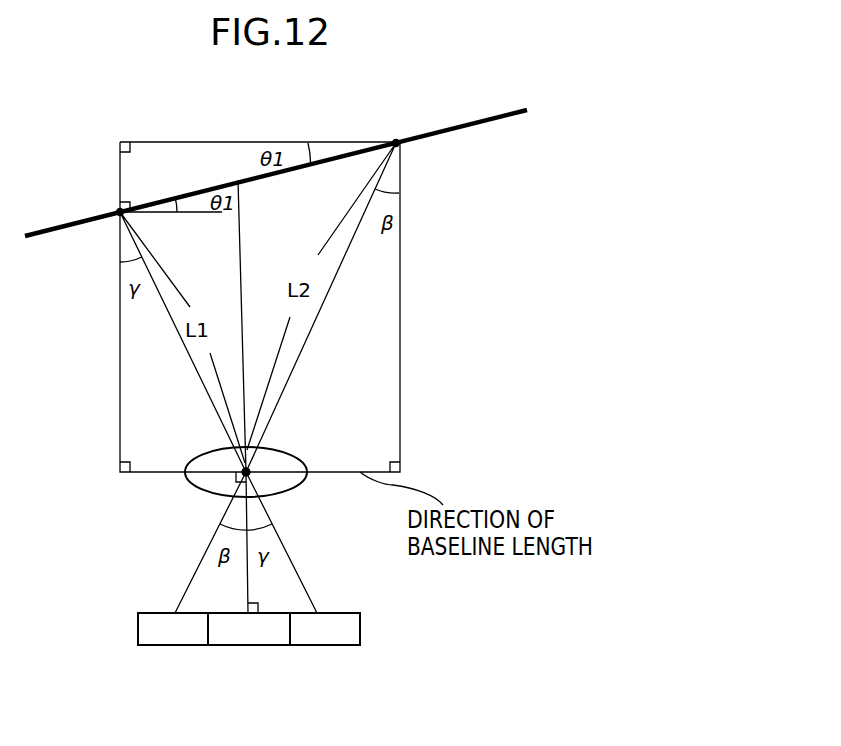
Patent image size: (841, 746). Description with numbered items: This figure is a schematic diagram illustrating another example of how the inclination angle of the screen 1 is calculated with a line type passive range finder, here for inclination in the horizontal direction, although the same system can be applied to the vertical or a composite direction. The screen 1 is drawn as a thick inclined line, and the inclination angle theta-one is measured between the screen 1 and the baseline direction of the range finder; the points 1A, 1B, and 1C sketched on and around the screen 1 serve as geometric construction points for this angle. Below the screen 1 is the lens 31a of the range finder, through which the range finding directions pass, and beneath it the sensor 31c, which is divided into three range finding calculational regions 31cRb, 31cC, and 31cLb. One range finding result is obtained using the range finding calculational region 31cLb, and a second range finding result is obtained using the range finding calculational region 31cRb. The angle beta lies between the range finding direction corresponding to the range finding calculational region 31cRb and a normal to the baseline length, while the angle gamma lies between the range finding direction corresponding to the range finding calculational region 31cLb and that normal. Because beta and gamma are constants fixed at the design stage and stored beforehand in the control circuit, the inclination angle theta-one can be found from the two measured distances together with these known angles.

The screen 1 is at (487, 118).
The object point A 1A is at (118, 210).
The object point B 1B is at (395, 141).
The reference point C 1C is at (114, 134).
The imaging lens 31a is at (302, 480).
The image sensor 31c is at (362, 614).
The range finding calculational region 31cRb is at (173, 646).
The center image sensing region 31cC is at (238, 647).
The range finding calculational region 31cLb is at (322, 647).